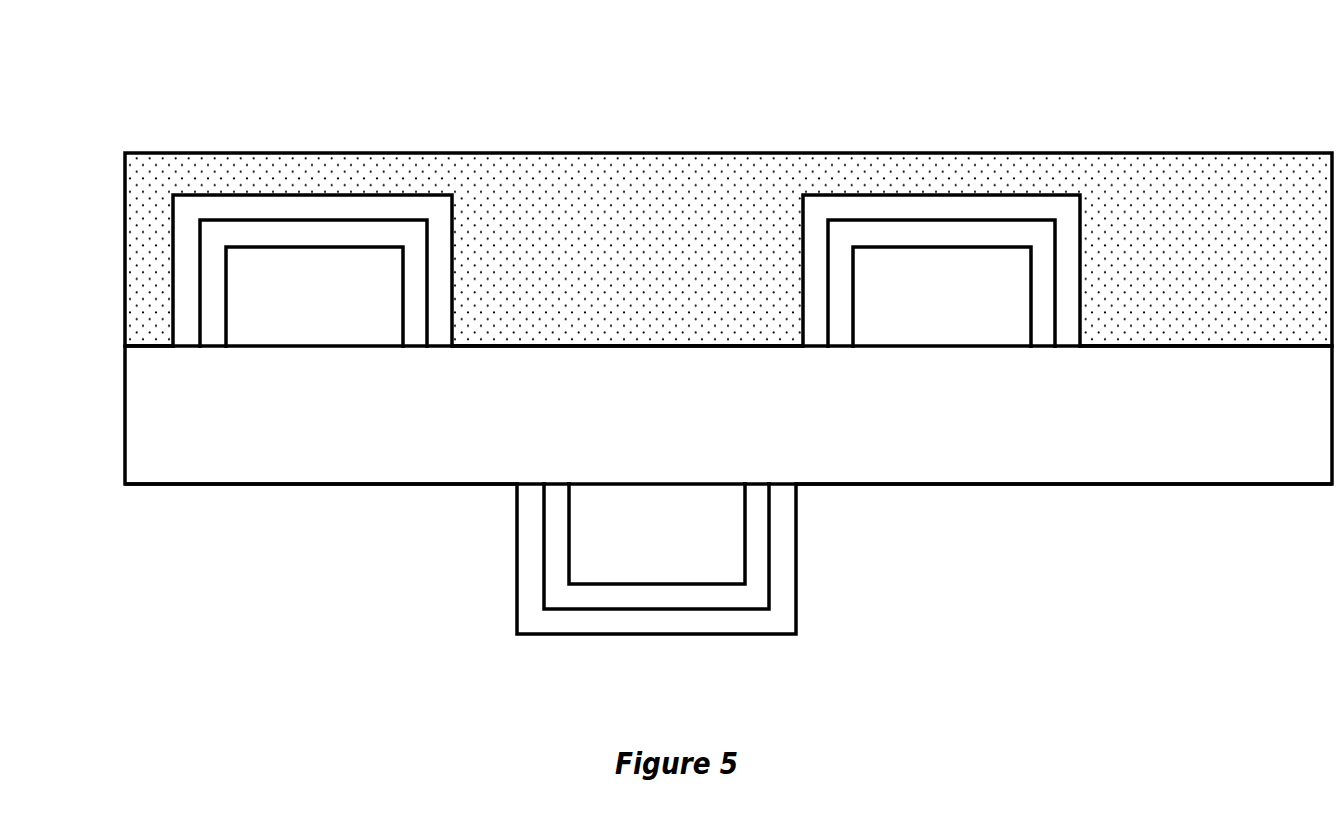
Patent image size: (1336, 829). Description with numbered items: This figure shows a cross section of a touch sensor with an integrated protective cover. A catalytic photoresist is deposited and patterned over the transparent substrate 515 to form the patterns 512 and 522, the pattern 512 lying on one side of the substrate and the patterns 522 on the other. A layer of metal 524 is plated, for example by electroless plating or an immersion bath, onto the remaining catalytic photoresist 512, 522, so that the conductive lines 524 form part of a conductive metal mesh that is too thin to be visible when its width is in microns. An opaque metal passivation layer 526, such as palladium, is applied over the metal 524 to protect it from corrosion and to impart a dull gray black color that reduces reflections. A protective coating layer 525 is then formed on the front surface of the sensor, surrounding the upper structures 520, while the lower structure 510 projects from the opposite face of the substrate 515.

The lower interconnect structure 510 is at (476, 641).
The pattern 512 is at (674, 549).
The transparent substrate 515 is at (217, 425).
The upper interconnect structures 520 is at (772, 200).
The pattern 522 is at (329, 307).
The metal 524 is at (423, 270).
The protective coating layer 525 is at (661, 273).
The metal passivation layer 526 is at (431, 207).